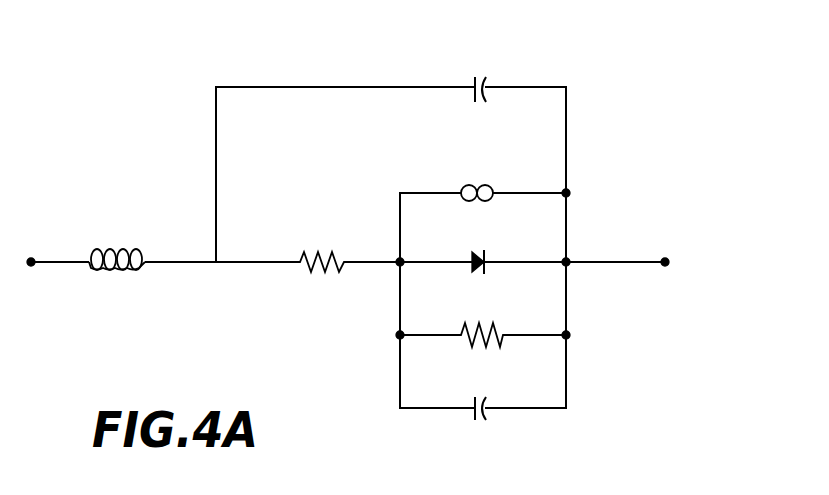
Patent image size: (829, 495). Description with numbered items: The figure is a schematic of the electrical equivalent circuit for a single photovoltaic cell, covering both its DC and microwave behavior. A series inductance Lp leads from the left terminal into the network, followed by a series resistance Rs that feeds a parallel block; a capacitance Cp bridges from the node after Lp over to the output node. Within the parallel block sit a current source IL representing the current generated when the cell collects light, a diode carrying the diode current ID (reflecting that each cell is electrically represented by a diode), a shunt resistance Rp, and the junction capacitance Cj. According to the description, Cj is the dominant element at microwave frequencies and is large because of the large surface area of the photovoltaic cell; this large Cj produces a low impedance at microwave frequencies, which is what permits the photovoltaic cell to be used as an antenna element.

The parasitic inductance Lp is at (117, 276).
The series resistance Rs is at (322, 280).
The parasitic capacitance Cp is at (487, 75).
The photocurrent source IL is at (427, 164).
The diode current ID is at (557, 239).
The parallel resistance Rp is at (481, 319).
The junction capacitance Cj is at (481, 392).